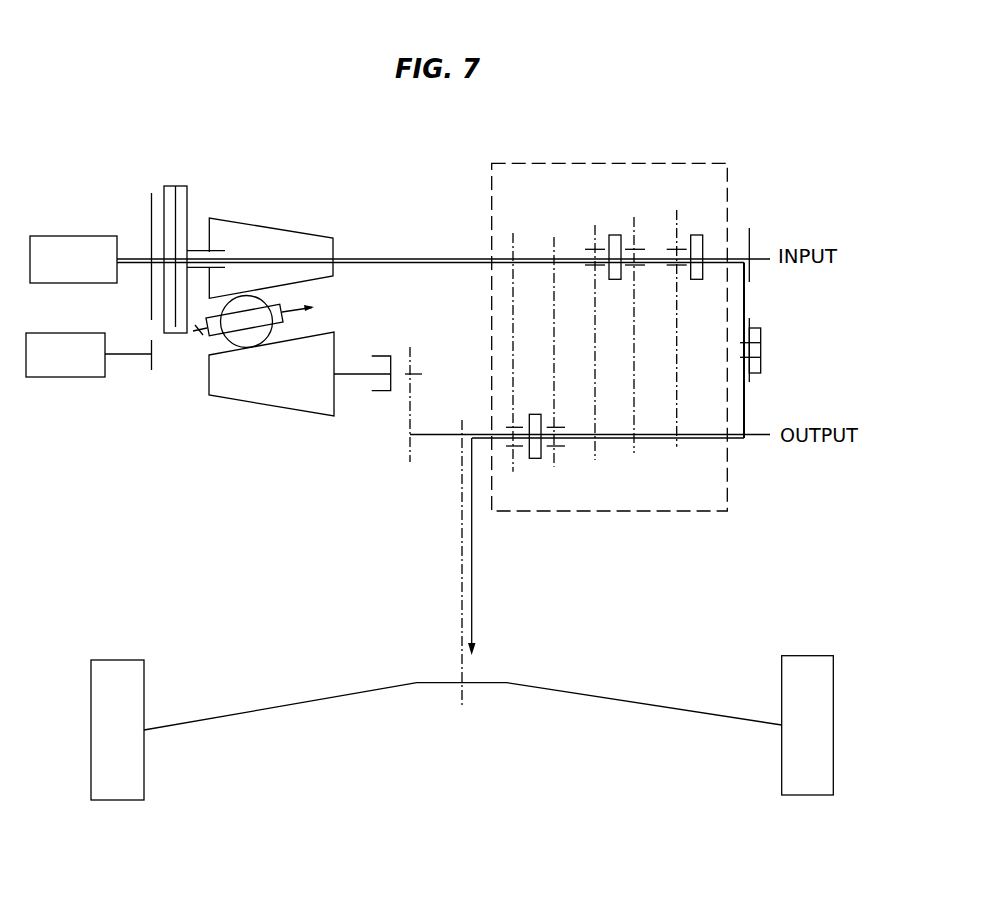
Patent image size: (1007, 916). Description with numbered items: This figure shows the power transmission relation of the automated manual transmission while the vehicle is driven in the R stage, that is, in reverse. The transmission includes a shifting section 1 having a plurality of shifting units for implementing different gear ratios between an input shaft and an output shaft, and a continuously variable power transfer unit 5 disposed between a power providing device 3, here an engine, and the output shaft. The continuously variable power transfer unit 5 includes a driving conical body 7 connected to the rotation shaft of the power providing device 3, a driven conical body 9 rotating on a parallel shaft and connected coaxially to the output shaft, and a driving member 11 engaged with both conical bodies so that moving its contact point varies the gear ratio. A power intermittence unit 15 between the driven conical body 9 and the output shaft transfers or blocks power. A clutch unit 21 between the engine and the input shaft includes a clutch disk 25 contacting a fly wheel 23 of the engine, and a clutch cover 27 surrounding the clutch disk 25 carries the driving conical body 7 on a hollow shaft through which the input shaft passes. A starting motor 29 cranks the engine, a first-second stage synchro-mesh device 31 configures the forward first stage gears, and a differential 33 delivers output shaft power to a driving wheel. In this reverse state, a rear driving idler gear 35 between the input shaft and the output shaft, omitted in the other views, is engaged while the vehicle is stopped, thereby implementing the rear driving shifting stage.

The shifting section 1 is at (624, 512).
The power providing device 3 is at (48, 236).
The continuously variable power transfer unit 5 is at (272, 203).
The driving conical body 7 is at (305, 233).
The driven conical body 9 is at (310, 396).
The driving member 11 is at (248, 348).
The power intermittence unit 15 is at (381, 392).
The clutch unit 21 is at (172, 342).
The fly wheel 23 is at (164, 205).
The clutch disk 25 is at (175, 198).
The clutch cover 27 is at (189, 205).
The starting motor 29 is at (65, 378).
The first-second stage synchro-mesh device 31 is at (533, 459).
The differential 33 is at (420, 655).
The rear driving idler gear 35 is at (750, 320).